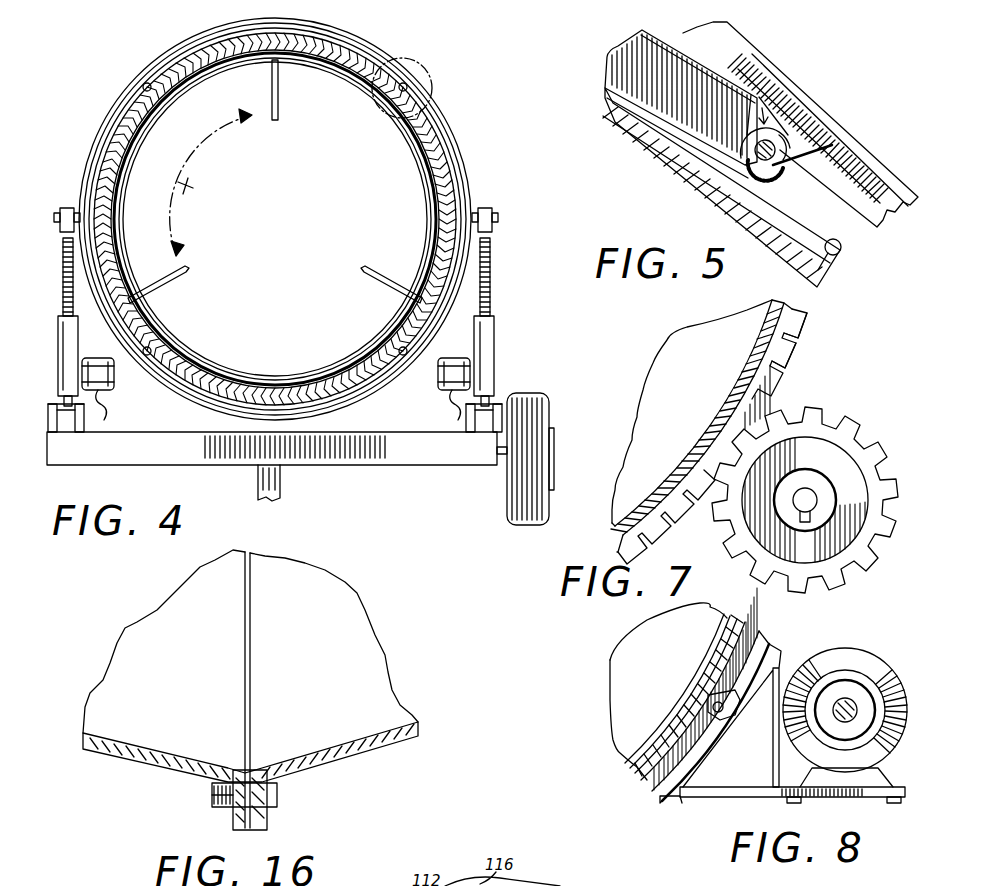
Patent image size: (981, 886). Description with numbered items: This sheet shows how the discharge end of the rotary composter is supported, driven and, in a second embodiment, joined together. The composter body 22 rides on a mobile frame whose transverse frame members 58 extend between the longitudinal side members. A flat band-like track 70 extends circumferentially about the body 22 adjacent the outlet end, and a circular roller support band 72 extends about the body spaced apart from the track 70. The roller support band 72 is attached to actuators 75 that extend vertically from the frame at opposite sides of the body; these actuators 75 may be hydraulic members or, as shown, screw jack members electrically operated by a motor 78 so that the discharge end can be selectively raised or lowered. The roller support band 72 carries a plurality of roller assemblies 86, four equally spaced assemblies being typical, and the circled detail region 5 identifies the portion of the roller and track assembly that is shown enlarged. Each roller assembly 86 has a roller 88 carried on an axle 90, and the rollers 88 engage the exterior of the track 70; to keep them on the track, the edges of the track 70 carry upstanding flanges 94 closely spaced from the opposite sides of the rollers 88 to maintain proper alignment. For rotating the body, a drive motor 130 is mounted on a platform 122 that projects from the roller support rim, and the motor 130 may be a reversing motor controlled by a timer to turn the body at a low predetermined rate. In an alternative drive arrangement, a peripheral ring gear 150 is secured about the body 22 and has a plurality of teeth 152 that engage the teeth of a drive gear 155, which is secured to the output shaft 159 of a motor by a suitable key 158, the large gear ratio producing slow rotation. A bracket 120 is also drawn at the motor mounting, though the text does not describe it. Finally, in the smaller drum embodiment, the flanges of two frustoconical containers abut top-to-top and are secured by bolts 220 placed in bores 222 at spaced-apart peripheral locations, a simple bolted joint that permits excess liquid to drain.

In FIG. 4, the detail view region 5 is at (424, 74).
In FIG. 4, the actuators 75 is at (494, 342).
In FIG. 4, the motor 78 is at (440, 372).
In FIG. 4, the transverse frame members 58 is at (417, 450).
In FIG. 5, the track 70 is at (605, 88).
In FIG. 5, the roller support band 72 is at (760, 64).
In FIG. 5, the roller assemblies 86 is at (798, 78).
In FIG. 5, the roller 88 is at (787, 172).
In FIG. 5, the axle 90 is at (727, 197).
In FIG. 5, the upstanding flanges 94 is at (839, 253).
In FIG. 7, the body 22 is at (736, 400).
In FIG. 7, the peripheral ring gear 150 is at (801, 333).
In FIG. 7, the teeth 152 is at (788, 386).
In FIG. 7, the drive gear 155 is at (843, 413).
In FIG. 7, the output shaft 159 is at (815, 482).
In FIG. 7, the key 158 is at (804, 516).
In FIG. 8, the drive motor 130 is at (864, 689).
In FIG. 8, the bracket 120 is at (888, 735).
In FIG. 8, the platform 122 is at (822, 797).
In FIG. 16, the bores 222 is at (266, 774).
In FIG. 16, the bolts 220 is at (270, 806).